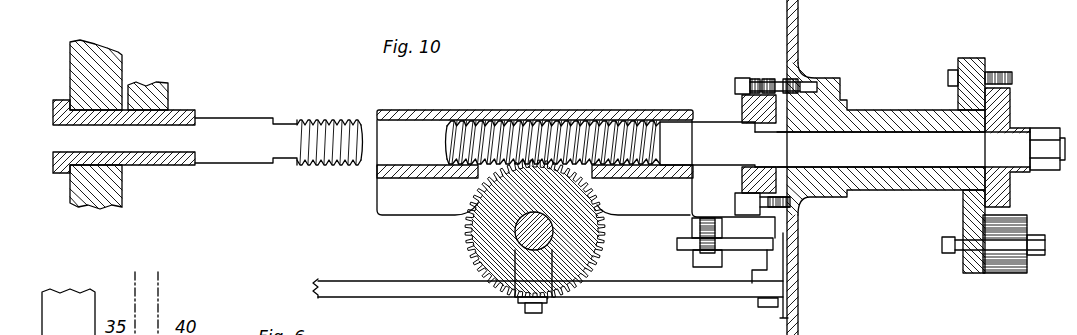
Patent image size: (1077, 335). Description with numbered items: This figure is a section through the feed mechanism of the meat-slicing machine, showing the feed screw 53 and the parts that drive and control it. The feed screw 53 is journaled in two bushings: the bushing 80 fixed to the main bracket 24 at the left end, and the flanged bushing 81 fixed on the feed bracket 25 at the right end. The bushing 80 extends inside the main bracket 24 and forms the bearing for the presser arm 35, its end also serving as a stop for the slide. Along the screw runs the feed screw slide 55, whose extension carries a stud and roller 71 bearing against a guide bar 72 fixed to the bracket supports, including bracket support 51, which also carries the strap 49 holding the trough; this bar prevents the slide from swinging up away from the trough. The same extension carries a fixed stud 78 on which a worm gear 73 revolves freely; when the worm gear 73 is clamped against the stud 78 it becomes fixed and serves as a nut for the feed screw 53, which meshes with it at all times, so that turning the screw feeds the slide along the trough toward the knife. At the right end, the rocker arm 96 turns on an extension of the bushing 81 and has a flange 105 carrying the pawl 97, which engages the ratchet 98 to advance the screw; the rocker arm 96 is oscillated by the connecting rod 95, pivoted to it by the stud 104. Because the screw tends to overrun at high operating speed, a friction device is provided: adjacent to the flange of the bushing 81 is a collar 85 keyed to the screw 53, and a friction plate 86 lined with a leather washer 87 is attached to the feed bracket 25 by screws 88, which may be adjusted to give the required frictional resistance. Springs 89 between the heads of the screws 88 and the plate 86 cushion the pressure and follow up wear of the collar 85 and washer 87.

The main bracket 24 is at (105, 50).
The presser arm 35 is at (170, 95).
The bushing 80 is at (53, 162).
The feed screw 53 is at (322, 120).
The feed screw slide 55 is at (625, 112).
The worm gear 73 is at (467, 250).
The fixed stud 78 is at (515, 230).
The stud and roller 71 is at (516, 296).
The guide bar 72 is at (421, 285).
The strap 49 is at (700, 228).
The bracket support 51 is at (677, 248).
The feed bracket 25 is at (799, 25).
The flanged bushing 81 is at (887, 122).
The rocker arm 96 is at (908, 190).
The leather washer 87 is at (742, 110).
The collar 85 is at (742, 186).
The screws 88 is at (737, 80).
The friction plate 86 is at (748, 78).
The springs 89 is at (758, 78).
The flange 105 is at (968, 58).
The pawl 97 is at (998, 70).
The ratchet 98 is at (1012, 105).
The connecting rod 95 is at (1008, 275).
The stud 104 is at (942, 245).